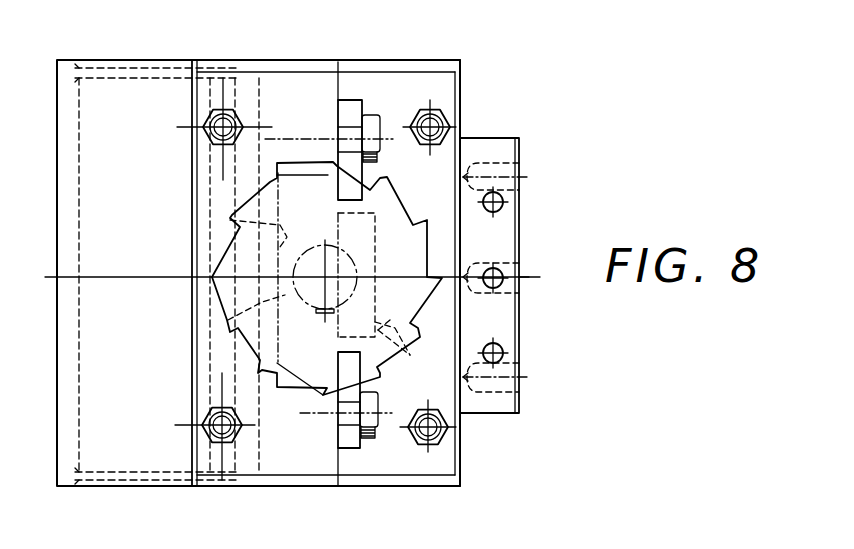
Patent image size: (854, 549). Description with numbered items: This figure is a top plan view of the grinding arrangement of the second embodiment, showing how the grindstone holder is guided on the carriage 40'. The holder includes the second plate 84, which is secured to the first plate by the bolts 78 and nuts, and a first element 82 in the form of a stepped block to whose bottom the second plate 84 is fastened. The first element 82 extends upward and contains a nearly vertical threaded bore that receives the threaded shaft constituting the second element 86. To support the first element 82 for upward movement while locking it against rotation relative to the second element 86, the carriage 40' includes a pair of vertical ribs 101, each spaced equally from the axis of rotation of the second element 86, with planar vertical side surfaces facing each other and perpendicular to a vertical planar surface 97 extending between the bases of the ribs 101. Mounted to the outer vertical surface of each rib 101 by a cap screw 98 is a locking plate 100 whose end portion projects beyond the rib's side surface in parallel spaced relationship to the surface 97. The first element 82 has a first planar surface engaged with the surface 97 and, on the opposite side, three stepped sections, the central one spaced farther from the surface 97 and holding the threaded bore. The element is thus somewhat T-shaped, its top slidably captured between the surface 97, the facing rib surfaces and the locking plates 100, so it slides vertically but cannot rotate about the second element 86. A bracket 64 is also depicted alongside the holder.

The carriage 40' is at (258, 251).
The vertical ribs 101 is at (341, 72).
The locking plate 100 is at (355, 105).
The second plate 84 is at (462, 70).
The cap screw 98 is at (372, 118).
The bolts 78 is at (448, 118).
The planar surface 97 is at (232, 217).
The second element 86 is at (300, 270).
The bracket 64 is at (420, 300).
The first element 82 is at (406, 362).